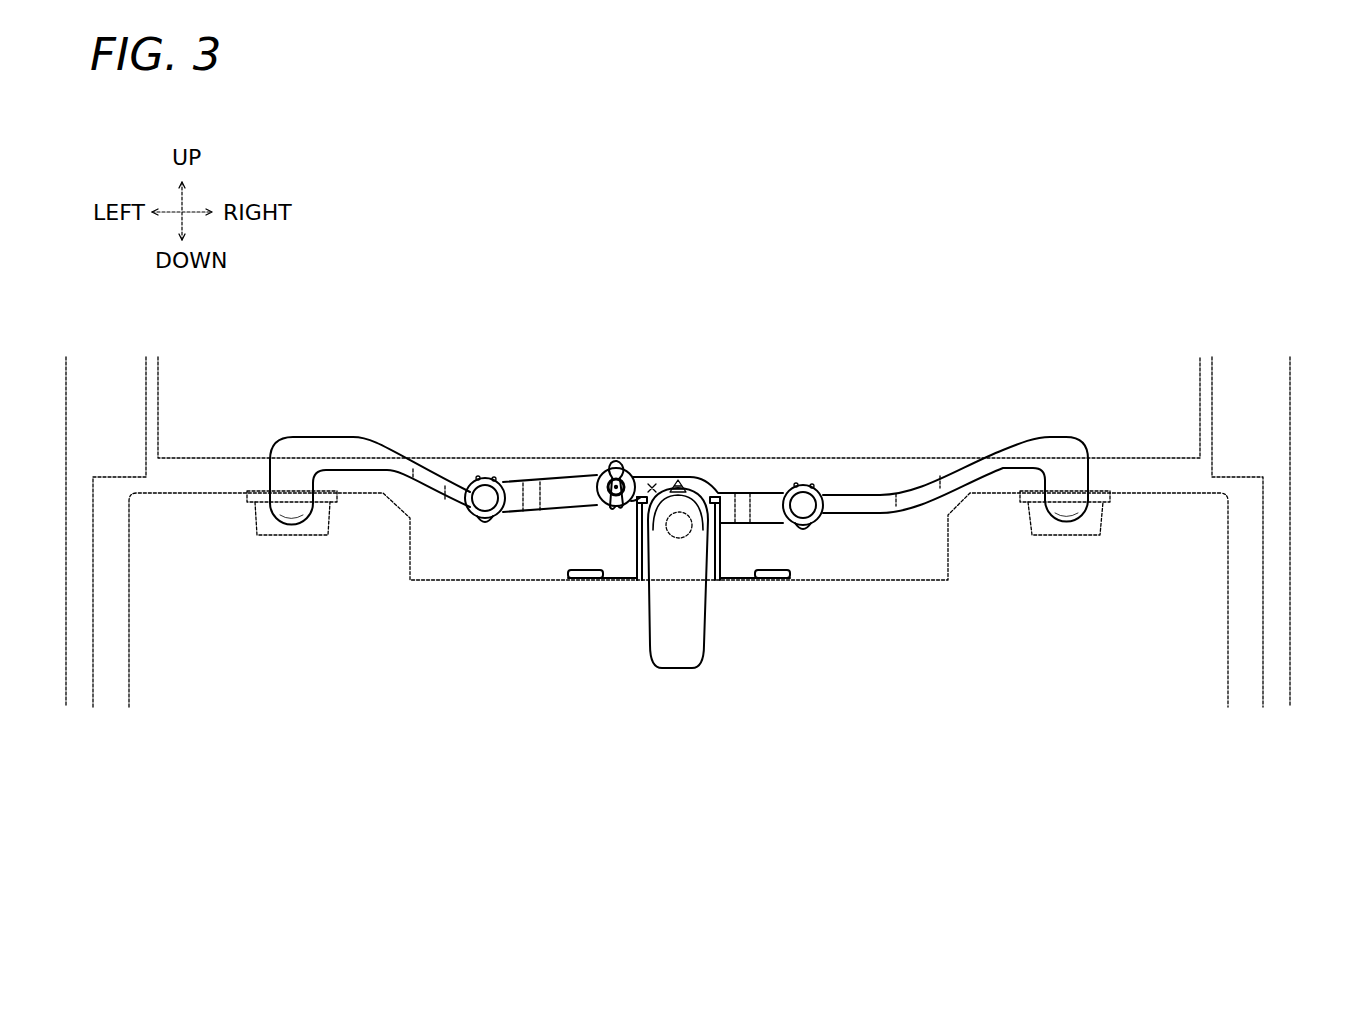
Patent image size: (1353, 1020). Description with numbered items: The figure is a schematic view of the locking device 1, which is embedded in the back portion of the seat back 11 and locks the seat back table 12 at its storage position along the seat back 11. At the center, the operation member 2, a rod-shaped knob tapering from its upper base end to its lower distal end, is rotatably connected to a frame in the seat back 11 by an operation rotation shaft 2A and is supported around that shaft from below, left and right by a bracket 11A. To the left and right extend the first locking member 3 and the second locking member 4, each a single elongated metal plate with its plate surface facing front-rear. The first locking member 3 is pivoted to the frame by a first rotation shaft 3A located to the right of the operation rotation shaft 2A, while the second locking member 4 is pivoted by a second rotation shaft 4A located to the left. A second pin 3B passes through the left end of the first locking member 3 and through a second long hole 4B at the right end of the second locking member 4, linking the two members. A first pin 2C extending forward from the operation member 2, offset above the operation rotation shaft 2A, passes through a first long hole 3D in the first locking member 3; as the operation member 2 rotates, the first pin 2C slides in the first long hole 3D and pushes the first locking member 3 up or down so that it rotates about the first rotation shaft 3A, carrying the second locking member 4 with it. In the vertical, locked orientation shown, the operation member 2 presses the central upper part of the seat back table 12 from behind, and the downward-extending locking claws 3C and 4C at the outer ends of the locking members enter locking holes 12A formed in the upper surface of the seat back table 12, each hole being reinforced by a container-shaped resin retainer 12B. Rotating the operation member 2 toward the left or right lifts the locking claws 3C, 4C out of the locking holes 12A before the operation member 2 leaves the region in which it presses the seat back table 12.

The locking device 1 is at (772, 328).
The operation member 2 is at (672, 615).
The operation rotation shaft 2A is at (670, 531).
The first pin 2C is at (679, 484).
The first locking member 3 is at (1000, 451).
The first rotation shaft 3A is at (803, 504).
The second pin 3B is at (610, 484).
The second long hole 4B is at (586, 448).
The locking claw 3C is at (1067, 516).
The first long hole 3D is at (652, 484).
The second locking member 4 is at (357, 447).
The second rotation shaft 4A is at (485, 497).
The locking claw 4C is at (291, 518).
The seat back 11 is at (1180, 412).
The bracket 11A is at (723, 546).
The seat back table 12 is at (1200, 553).
The locking hole 12A is at (318, 521).
The retainer 12B is at (262, 521).